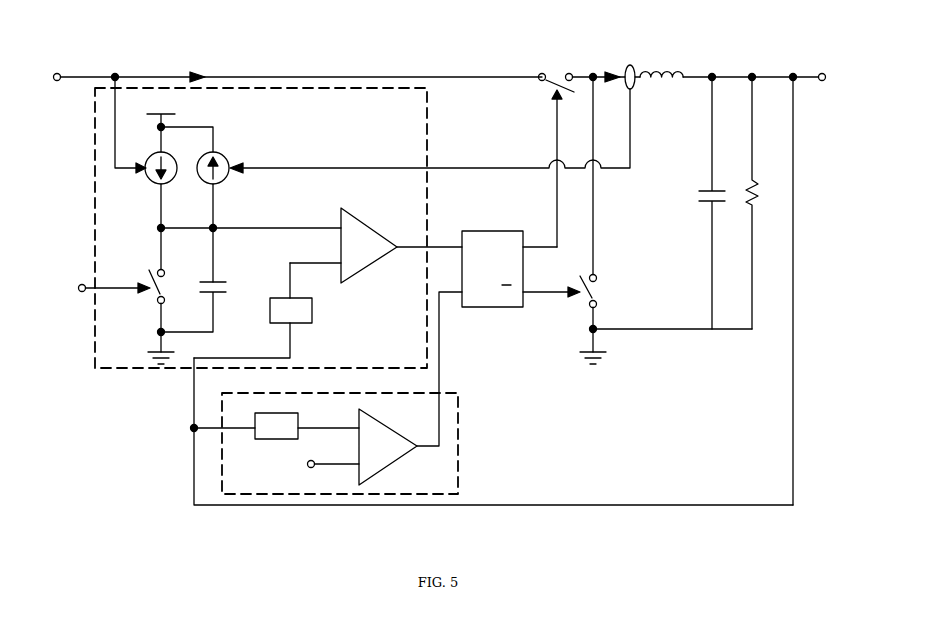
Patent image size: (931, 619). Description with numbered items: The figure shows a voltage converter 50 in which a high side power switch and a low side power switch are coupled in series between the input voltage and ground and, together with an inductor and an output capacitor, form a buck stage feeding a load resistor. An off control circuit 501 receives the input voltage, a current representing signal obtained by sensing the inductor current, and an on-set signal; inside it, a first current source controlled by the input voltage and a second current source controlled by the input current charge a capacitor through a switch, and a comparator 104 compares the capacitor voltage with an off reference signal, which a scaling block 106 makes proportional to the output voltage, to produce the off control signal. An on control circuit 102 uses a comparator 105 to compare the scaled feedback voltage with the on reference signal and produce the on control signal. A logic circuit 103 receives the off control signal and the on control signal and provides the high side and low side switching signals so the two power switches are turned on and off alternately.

The voltage converter 50 is at (435, 256).
The off-time control circuit 501 is at (235, 225).
The on control circuit 102 is at (326, 443).
The logic circuit 103 is at (478, 232).
The comparator 104 is at (369, 245).
The comparator 105 is at (388, 447).
The gain block K1 106 is at (312, 316).